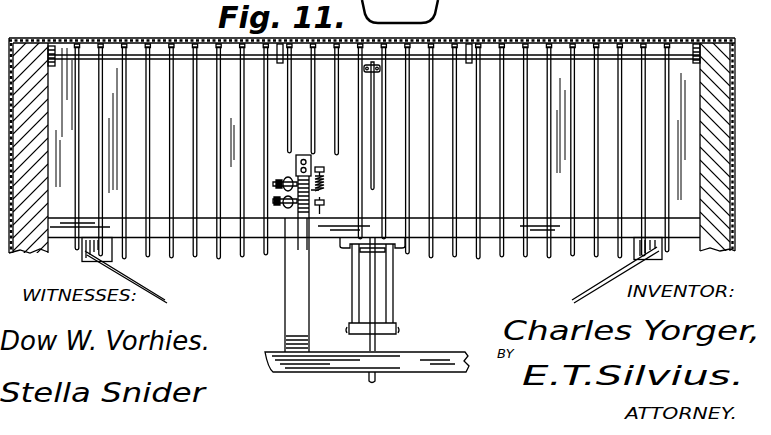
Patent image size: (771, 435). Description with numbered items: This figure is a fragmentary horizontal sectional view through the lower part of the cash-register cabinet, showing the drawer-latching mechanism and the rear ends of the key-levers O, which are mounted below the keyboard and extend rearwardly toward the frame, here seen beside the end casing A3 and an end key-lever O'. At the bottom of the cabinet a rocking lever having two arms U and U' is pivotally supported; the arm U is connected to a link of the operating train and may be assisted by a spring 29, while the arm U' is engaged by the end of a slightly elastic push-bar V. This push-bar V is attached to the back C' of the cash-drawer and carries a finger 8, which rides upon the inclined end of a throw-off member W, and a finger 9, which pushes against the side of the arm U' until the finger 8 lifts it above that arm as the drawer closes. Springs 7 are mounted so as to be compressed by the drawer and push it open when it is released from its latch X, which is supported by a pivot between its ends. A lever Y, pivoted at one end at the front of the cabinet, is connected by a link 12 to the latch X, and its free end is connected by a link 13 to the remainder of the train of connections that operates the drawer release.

The pin O' is at (81, 129).
The finger 8 is at (162, 54).
The link 13 is at (381, 72).
The key-levers O is at (516, 148).
The casing A3 is at (628, 36).
The throw-off member W is at (303, 178).
The arm of rocking lever U is at (272, 176).
The arm of rocking lever U' is at (259, 200).
The spring 29 is at (325, 190).
The lever Y is at (374, 189).
The finger 9 is at (266, 256).
The push-bar V is at (286, 293).
The link 12 is at (378, 257).
The latch X is at (378, 346).
The back of the cash-drawer C' is at (367, 353).
The springs 7 is at (148, 289).